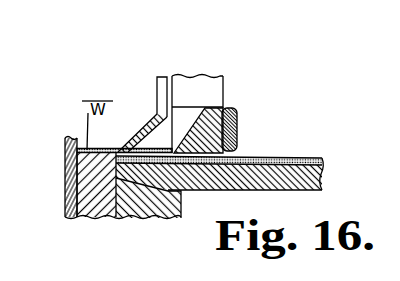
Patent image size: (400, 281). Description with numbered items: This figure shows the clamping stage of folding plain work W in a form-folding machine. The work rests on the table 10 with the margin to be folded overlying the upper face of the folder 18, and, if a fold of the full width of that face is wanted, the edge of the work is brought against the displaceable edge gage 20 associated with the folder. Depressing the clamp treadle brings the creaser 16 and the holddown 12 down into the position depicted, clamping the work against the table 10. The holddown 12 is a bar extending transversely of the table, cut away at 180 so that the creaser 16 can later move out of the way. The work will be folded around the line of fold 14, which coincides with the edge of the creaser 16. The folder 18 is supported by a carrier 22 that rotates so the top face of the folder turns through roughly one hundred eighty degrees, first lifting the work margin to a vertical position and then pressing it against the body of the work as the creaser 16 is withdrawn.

The table 10 is at (274, 176).
The holddown 12 is at (234, 108).
The line of fold 14 is at (117, 150).
The creaser 16 is at (162, 90).
The folder 18 is at (92, 172).
The edge gage 20 is at (72, 198).
The carrier 22 is at (168, 198).
The cut-away portion of the holddown bar 180 is at (179, 108).